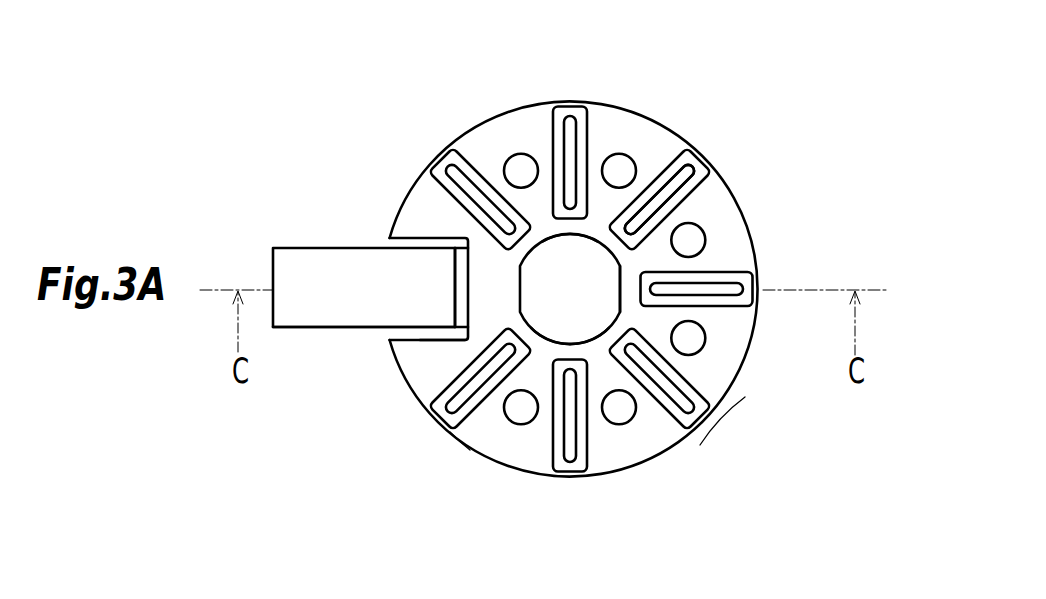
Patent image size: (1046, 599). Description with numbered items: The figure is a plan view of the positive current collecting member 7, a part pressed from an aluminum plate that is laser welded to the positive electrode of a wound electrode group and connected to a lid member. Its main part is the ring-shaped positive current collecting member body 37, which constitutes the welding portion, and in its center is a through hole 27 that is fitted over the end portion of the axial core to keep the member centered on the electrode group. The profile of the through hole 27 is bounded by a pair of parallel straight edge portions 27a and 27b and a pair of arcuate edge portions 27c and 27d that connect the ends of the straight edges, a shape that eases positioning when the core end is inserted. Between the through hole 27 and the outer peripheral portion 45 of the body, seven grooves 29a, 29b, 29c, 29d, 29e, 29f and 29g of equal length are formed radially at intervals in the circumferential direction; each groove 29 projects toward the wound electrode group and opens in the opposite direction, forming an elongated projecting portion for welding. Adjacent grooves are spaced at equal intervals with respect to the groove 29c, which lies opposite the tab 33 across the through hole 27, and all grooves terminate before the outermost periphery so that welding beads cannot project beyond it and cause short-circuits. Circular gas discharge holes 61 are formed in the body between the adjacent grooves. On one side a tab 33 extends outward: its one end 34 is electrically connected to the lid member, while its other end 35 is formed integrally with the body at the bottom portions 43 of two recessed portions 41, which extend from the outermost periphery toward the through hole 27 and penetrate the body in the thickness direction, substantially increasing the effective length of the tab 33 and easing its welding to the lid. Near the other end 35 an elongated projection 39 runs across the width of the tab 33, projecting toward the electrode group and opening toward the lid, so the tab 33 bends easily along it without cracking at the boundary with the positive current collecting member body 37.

The positive current collecting member 7 is at (513, 102).
The through hole 27 is at (553, 341).
The straight edge portion 27a is at (620, 272).
The straight edge portion 27b is at (433, 382).
The arcuate edge portion 27c is at (590, 235).
The arcuate edge portion 27d is at (593, 340).
The groove 29 is at (687, 160).
The groove 29a is at (560, 115).
The groove 29b is at (703, 170).
The groove 29c is at (742, 298).
The groove 29d is at (693, 402).
The groove 29e is at (580, 463).
The groove 29f is at (452, 420).
The groove 29g is at (443, 178).
The tab 33 is at (285, 265).
The one end of the tab 34 is at (287, 317).
The other end of the tab 35 is at (440, 337).
The positive current collecting member body 37 is at (492, 410).
The elongated projection 39 is at (455, 272).
The recessed portion 41 is at (390, 238).
The bottom portion of the recessed portion 43 is at (468, 238).
The peripheral portion 45 is at (730, 388).
The gas discharge hole 61 is at (517, 167).